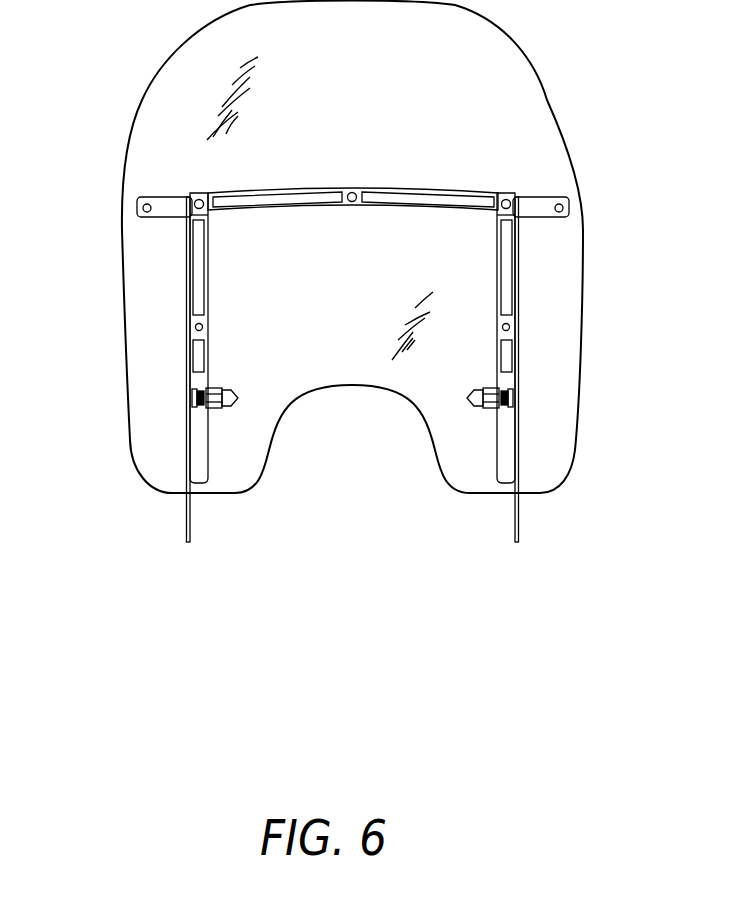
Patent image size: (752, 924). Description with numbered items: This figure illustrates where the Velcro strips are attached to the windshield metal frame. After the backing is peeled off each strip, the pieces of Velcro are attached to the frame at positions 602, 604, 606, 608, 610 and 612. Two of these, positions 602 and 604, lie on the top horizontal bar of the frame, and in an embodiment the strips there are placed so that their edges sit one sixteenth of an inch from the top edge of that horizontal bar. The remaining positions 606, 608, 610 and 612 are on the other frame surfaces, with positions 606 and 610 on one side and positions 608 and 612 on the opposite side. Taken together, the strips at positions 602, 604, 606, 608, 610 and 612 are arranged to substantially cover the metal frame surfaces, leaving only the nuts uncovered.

The position 602 is at (232, 200).
The position 604 is at (457, 200).
The position 606 is at (198, 282).
The position 608 is at (508, 283).
The position 610 is at (198, 355).
The position 612 is at (507, 355).